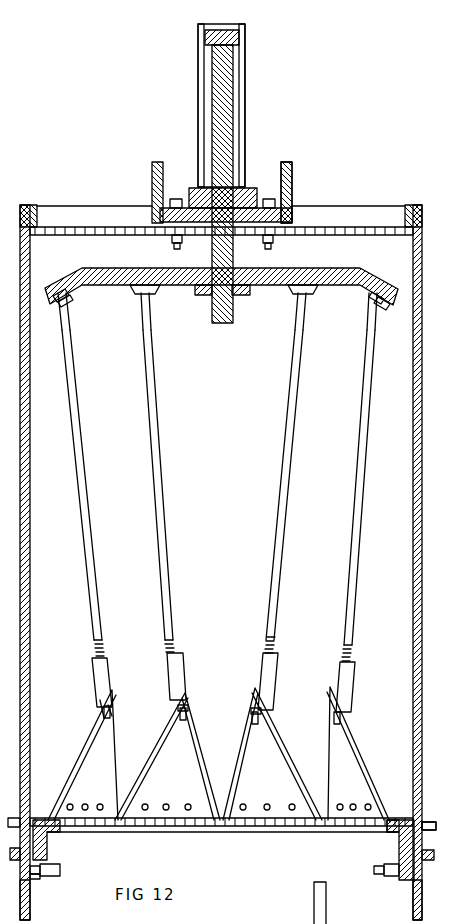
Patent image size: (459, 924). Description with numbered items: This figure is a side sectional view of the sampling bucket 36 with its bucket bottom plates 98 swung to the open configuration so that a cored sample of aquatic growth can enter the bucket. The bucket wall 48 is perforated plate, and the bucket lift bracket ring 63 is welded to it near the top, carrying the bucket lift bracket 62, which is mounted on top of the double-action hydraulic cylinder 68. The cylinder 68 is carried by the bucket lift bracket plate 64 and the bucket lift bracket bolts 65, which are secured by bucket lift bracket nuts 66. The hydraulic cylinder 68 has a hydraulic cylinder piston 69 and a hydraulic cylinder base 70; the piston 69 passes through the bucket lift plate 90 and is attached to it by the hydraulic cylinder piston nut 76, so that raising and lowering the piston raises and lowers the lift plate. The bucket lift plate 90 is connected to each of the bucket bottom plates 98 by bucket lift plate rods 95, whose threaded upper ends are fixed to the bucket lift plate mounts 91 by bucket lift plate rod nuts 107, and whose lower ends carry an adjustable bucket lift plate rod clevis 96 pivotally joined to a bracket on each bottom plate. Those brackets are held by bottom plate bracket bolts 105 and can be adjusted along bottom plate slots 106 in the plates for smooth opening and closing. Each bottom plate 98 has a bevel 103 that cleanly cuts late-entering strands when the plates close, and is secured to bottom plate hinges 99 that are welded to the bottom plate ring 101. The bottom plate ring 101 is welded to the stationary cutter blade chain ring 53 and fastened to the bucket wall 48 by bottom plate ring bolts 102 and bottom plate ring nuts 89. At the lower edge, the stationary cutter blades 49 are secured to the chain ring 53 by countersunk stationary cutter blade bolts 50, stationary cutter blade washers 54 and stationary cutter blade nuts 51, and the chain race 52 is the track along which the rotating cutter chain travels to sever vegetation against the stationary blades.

The sampling bucket 36 is at (429, 308).
The bucket wall 48 is at (44, 515).
The stationary cutter blades 49 is at (30, 900).
The stationary cutter blade bolts 50 is at (60, 872).
The stationary cutter blade nuts 51 is at (44, 878).
The chain race 52 is at (12, 846).
The stationary cutter blade chain ring 53 is at (48, 845).
The stationary cutter blade washers 54 is at (60, 862).
The bucket lift bracket 62 is at (292, 172).
The bucket lift bracket ring 63 is at (40, 205).
The bucket lift bracket plate 64 is at (296, 214).
The bucket lift bracket bolts 65 is at (165, 197).
The bucket lift bracket nuts 66 is at (176, 240).
The hydraulic cylinder 68 is at (256, 63).
The hydraulic cylinder piston 69 is at (236, 146).
The hydraulic cylinder base 70 is at (256, 172).
The hydraulic cylinder piston nut 76 is at (240, 290).
The bottom plate ring nuts 89 is at (12, 818).
The bucket lift plate 90 is at (362, 283).
The bucket lift plate mounts 91 is at (50, 305).
The bucket lift plate rods 95 is at (90, 544).
The bucket lift plate rod clevis 96 is at (105, 675).
The bucket bottom plates 98 is at (103, 784).
The bottom plate hinges 99 is at (146, 828).
The bottom plate ring 101 is at (396, 820).
The bottom plate ring bolts 102 is at (434, 832).
The bevel 103 is at (246, 702).
The bottom plate bracket bolts 105 is at (252, 716).
The bottom plate slots 106 is at (110, 715).
The bucket lift plate rod nuts 107 is at (67, 270).